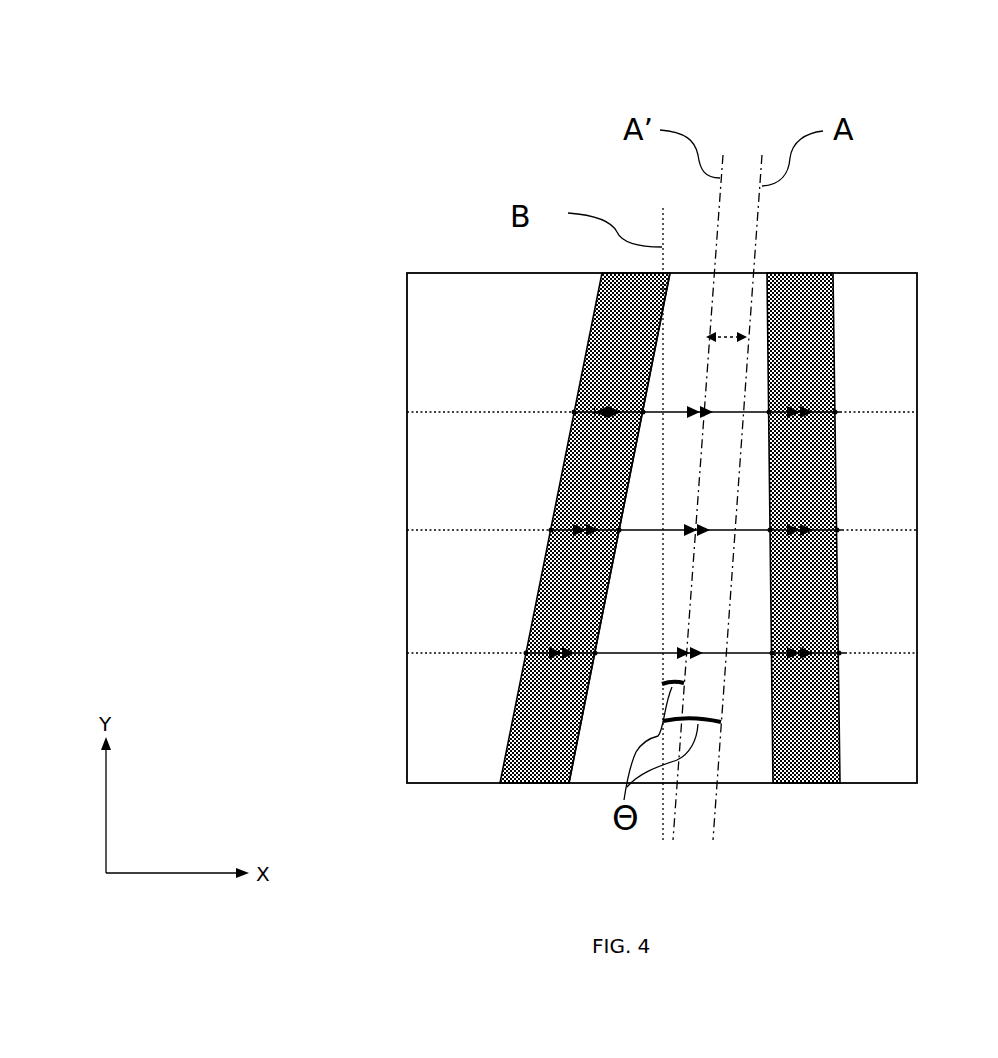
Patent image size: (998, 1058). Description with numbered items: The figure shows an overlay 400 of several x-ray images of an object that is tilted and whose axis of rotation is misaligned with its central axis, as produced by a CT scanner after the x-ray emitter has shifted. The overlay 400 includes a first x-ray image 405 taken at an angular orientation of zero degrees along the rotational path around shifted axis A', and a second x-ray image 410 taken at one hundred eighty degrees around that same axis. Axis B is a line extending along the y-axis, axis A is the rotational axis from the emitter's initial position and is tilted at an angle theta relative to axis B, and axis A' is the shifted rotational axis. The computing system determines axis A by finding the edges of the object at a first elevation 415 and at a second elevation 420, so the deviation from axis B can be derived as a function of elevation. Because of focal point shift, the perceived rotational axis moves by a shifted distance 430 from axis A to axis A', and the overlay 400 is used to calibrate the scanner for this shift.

The overlay 400 is at (186, 89).
The first x-ray image 405 is at (592, 329).
The second x-ray image 410 is at (833, 305).
The first elevation 415 is at (628, 476).
The second elevation 420 is at (638, 532).
The shifted distance 430 is at (710, 338).